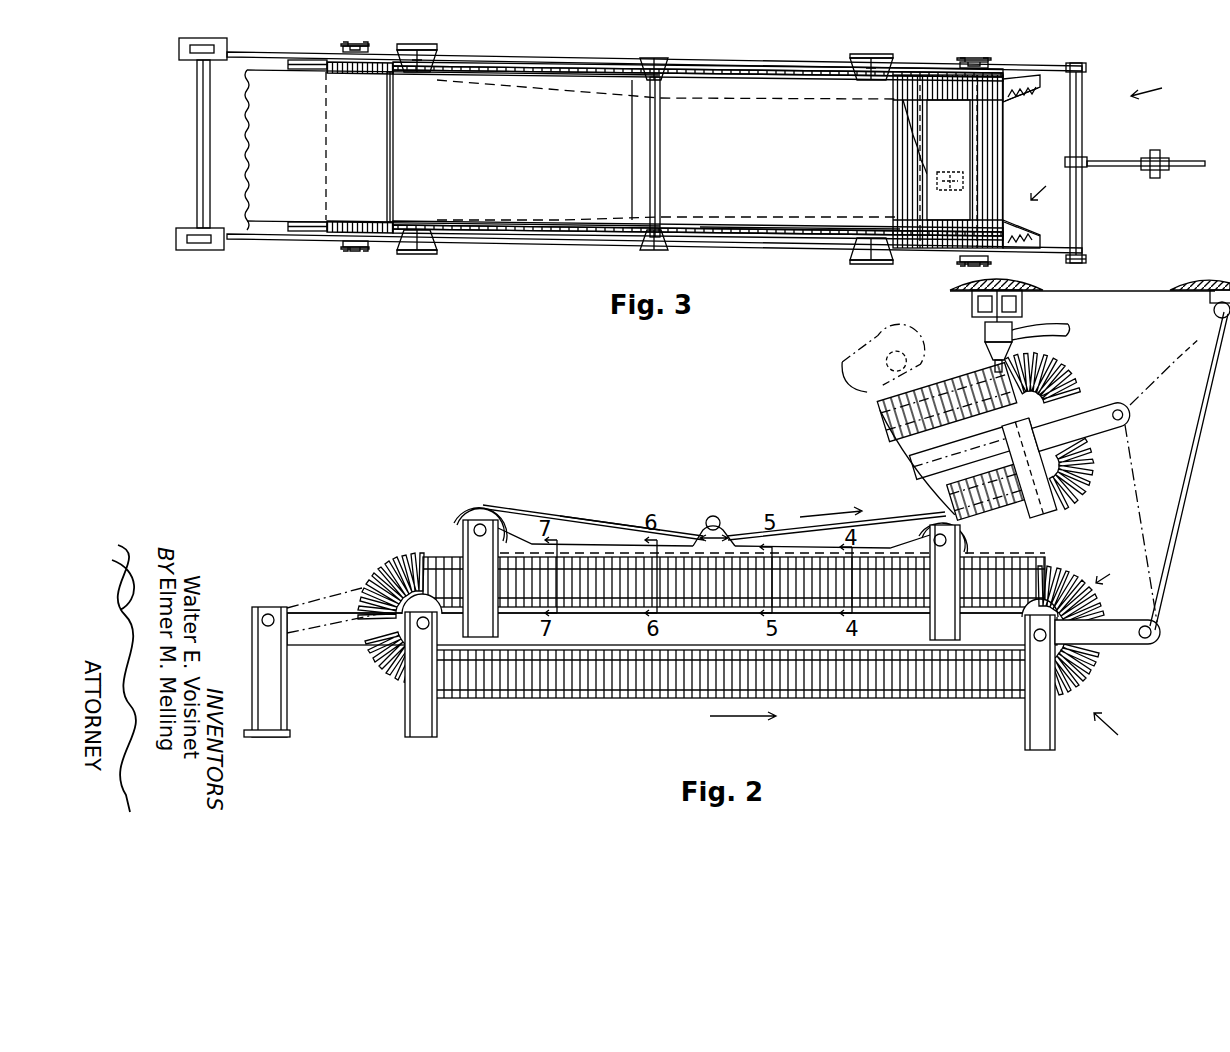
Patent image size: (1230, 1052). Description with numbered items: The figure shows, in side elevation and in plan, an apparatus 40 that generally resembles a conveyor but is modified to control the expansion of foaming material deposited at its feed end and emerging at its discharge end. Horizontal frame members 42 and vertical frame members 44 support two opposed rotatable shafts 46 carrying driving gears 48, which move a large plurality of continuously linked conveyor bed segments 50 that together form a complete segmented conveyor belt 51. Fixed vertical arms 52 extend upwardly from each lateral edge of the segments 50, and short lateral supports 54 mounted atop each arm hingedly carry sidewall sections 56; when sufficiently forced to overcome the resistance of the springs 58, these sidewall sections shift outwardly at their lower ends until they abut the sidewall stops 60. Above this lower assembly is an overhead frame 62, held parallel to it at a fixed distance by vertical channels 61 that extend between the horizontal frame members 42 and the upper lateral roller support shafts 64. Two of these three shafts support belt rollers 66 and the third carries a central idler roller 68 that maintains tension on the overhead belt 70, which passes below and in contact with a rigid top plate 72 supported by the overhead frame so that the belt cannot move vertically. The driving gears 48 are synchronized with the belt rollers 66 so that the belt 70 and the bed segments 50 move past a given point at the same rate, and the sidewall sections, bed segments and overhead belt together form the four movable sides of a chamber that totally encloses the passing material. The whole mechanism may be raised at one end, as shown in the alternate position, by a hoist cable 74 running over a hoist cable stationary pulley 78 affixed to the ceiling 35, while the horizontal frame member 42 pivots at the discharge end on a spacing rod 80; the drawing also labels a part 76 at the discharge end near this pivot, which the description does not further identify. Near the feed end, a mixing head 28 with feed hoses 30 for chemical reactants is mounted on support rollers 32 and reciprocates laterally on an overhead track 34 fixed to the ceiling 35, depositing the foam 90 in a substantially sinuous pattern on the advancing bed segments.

In FIG. 3, the mixing head 28 is at (963, 175).
In FIG. 2, the mixing head 28 is at (985, 333).
In FIG. 2, the feed hoses 30 is at (1040, 334).
In FIG. 2, the support rollers 32 is at (972, 298).
In FIG. 2, the overhead track 34 is at (1022, 301).
In FIG. 2, the ceiling 35 is at (1190, 290).
In FIG. 3, the apparatus 40 is at (1164, 85).
In FIG. 2, the apparatus 40 is at (1121, 734).
In FIG. 3, the horizontal frame members 42 is at (512, 63).
In FIG. 2, the horizontal frame members 42 is at (886, 642).
In FIG. 3, the vertical frame members 44 is at (377, 253).
In FIG. 2, the vertical frame members 44 is at (432, 724).
In FIG. 3, the rotatable shafts 46 is at (352, 251).
In FIG. 2, the rotatable shafts 46 is at (427, 630).
In FIG. 2, the driving gears 48 is at (436, 604).
In FIG. 3, the conveyor bed segments 50 is at (940, 236).
In FIG. 2, the conveyor bed segments 50 is at (989, 613).
In FIG. 3, the segmented conveyor belt 51 is at (1047, 183).
In FIG. 2, the segmented conveyor belt 51 is at (1115, 573).
In FIG. 3, the vertical arms 52 is at (1030, 76).
In FIG. 2, the vertical arms 52 is at (1063, 571).
In FIG. 3, the lateral supports 54 is at (1043, 243).
In FIG. 3, the sidewall sections 56 is at (303, 62).
In FIG. 3, the springs 58 is at (1012, 101).
In FIG. 3, the sidewall stops 60 is at (1012, 226).
In FIG. 3, the vertical channels 61 is at (432, 250).
In FIG. 2, the vertical channels 61 is at (934, 623).
In FIG. 3, the overhead frame 62 is at (792, 246).
In FIG. 2, the overhead frame 62 is at (583, 553).
In FIG. 3, the upper lateral roller support shafts 64 is at (656, 64).
In FIG. 2, the upper lateral roller support shafts 64 is at (483, 527).
In FIG. 2, the belt rollers 66 is at (480, 506).
In FIG. 3, the central idler roller 68 is at (651, 234).
In FIG. 2, the central idler roller 68 is at (711, 514).
In FIG. 3, the overhead belt 70 is at (389, 95).
In FIG. 2, the overhead belt 70 is at (606, 528).
In FIG. 3, the top plate 72 is at (590, 67).
In FIG. 2, the top plate 72 is at (565, 553).
In FIG. 3, the hoist cable 74 is at (1182, 161).
In FIG. 2, the hoist cable 74 is at (1188, 458).
In FIG. 3, the arm 76 is at (1084, 232).
In FIG. 2, the arm 76 is at (1150, 642).
In FIG. 3, the hoist cable stationary pulley 78 is at (1149, 157).
In FIG. 2, the hoist cable stationary pulley 78 is at (1214, 313).
In FIG. 3, the spacing rod 80 is at (197, 152).
In FIG. 2, the spacing rod 80 is at (266, 612).
In FIG. 3, the foam 90 is at (903, 126).